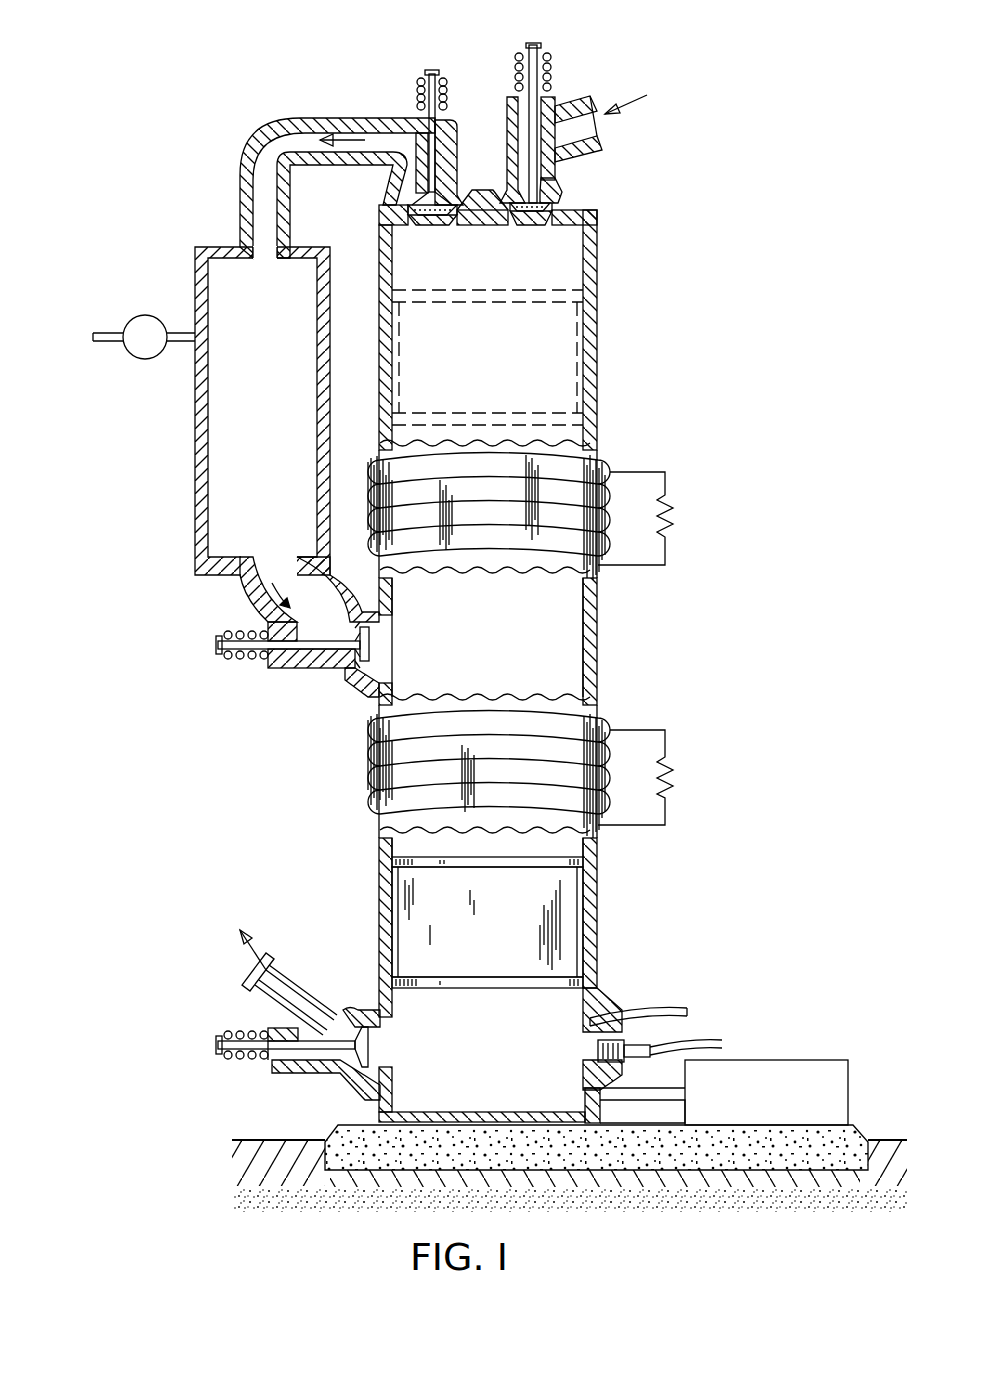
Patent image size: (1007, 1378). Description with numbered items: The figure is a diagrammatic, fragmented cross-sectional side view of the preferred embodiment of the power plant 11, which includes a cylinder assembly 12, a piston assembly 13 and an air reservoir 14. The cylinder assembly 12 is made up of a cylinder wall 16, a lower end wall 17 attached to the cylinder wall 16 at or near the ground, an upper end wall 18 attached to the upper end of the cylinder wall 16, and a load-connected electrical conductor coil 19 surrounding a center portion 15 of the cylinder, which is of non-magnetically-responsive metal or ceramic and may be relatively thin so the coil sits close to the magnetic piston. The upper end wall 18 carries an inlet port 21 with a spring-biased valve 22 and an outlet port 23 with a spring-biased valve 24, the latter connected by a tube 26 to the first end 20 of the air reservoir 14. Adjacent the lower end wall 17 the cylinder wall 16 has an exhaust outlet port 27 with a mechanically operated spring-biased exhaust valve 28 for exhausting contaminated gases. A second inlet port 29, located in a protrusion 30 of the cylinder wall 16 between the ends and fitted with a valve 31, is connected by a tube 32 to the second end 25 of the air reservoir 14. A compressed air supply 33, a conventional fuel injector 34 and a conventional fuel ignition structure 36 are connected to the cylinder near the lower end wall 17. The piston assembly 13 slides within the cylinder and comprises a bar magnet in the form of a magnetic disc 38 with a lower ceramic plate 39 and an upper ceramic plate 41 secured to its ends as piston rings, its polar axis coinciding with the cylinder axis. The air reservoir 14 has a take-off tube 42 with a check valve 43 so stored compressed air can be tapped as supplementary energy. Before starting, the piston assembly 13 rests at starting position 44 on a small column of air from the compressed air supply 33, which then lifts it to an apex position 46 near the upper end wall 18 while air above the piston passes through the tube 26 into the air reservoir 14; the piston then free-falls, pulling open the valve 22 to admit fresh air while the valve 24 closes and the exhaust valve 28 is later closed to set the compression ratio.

The power plant 11 is at (584, 646).
The cylinder assembly 12 is at (534, 638).
The piston assembly 13 is at (526, 910).
The air reservoir 14 is at (257, 448).
The center portion 15 is at (496, 638).
The cylinder wall 16 is at (587, 402).
The lower end wall 17 is at (447, 1110).
The upper end wall 18 is at (580, 208).
The electrical conductor coil 19 is at (645, 567).
The first end of air reservoir 20 is at (222, 250).
The inlet port 21 is at (533, 217).
The spring-biased valve 22 is at (551, 122).
The outlet port 23 is at (410, 212).
The spring-biased valve 24 is at (402, 142).
The second end of air reservoir 25 is at (279, 589).
The tube 26 is at (270, 160).
The exhaust outlet port 27 is at (295, 1015).
The exhaust valve 28 is at (293, 1012).
The second inlet port 29 is at (358, 663).
The protrusion 30 is at (291, 666).
The valve 31 is at (267, 628).
The tube 32 is at (258, 582).
The compressed air supply 33 is at (763, 1060).
The fuel injector 34 is at (661, 1025).
The fuel ignition structure 36 is at (647, 1043).
The magnetic disc 38 is at (548, 938).
The lower ceramic plate 39 is at (552, 975).
The upper ceramic plate 41 is at (550, 855).
The take-off tube 42 is at (178, 330).
The check valve 43 is at (144, 336).
The starting position 44 is at (372, 853).
The apex position 46 is at (372, 287).